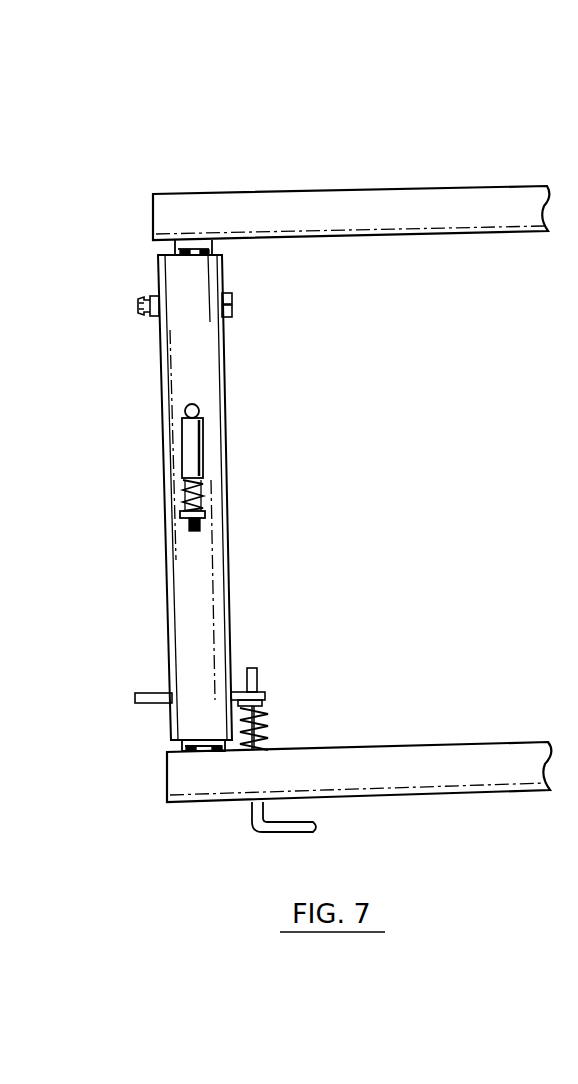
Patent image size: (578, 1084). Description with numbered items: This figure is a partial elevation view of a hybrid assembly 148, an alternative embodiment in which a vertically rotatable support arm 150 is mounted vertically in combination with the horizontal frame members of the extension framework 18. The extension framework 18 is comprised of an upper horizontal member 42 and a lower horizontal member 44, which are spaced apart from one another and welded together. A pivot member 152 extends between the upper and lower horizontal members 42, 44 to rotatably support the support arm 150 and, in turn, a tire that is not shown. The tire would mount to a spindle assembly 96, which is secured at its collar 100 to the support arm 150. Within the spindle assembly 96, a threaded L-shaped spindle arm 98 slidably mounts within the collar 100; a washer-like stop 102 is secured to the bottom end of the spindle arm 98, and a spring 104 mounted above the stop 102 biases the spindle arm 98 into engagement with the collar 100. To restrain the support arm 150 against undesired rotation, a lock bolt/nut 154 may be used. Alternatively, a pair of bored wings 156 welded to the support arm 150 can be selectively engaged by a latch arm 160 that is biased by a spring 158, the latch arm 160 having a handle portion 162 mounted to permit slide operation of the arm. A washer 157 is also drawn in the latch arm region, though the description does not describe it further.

The extension framework 18 is at (358, 185).
The upper horizontal member 42 is at (368, 188).
The lower horizontal member 44 is at (400, 745).
The hybrid assembly 148 is at (457, 437).
The vertically rotatable support arm 150 is at (178, 378).
The pivot member 152 is at (170, 252).
The lock bolt/nut 154 is at (232, 305).
The bored wings 156 is at (265, 693).
The washer 157 is at (268, 706).
The spring 158 is at (268, 725).
The latch arm 160 is at (253, 665).
The handle portion 162 is at (316, 828).
The spindle assembly 96 is at (203, 405).
The spindle arm 98 is at (190, 530).
The collar 100 is at (203, 442).
The washer-like stop 102 is at (203, 515).
The spring 104 is at (203, 493).